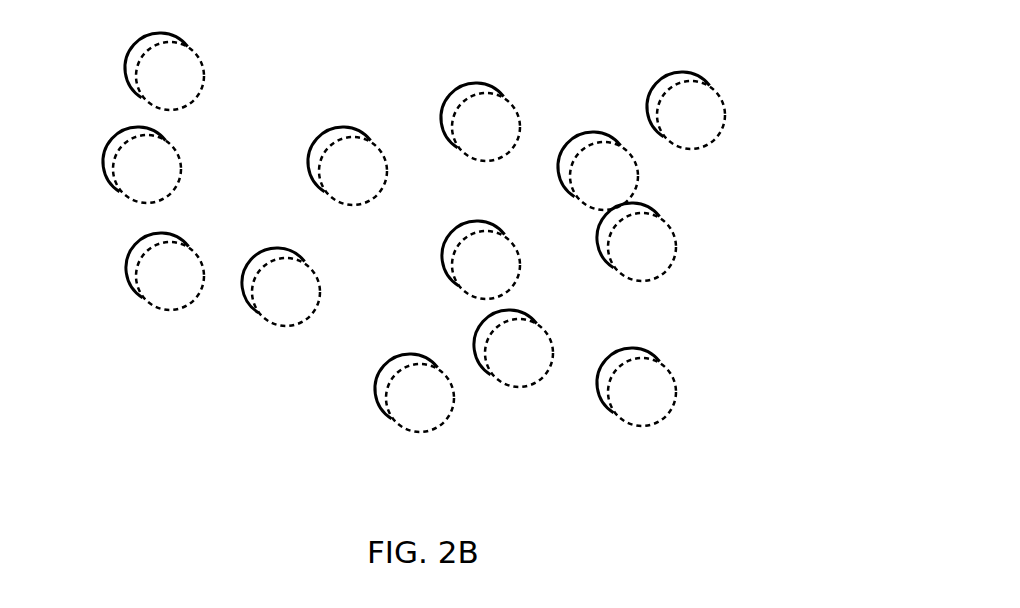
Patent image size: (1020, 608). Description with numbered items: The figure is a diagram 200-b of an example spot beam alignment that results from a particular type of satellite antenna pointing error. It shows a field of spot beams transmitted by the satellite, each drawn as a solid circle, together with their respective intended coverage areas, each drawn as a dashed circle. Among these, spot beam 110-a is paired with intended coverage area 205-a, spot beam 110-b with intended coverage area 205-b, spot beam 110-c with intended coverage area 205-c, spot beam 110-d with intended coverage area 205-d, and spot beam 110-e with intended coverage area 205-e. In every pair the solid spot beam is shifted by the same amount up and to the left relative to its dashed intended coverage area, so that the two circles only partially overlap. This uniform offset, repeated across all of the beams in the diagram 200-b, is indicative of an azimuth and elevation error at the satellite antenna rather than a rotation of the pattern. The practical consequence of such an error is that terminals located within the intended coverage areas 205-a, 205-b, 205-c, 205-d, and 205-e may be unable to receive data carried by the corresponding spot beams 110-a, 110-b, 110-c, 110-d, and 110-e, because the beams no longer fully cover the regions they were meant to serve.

The spot beam 110-a is at (127, 63).
The intended coverage area 205-a is at (200, 62).
The spot beam 110-b is at (668, 76).
The intended coverage area 205-b is at (717, 97).
The spot beam 110-c is at (127, 270).
The intended coverage area 205-c is at (183, 306).
The spot beam 110-d is at (441, 267).
The intended coverage area 205-d is at (518, 272).
The spot beam 110-e is at (378, 402).
The intended coverage area 205-e is at (452, 407).
The diagram 200-b is at (681, 456).